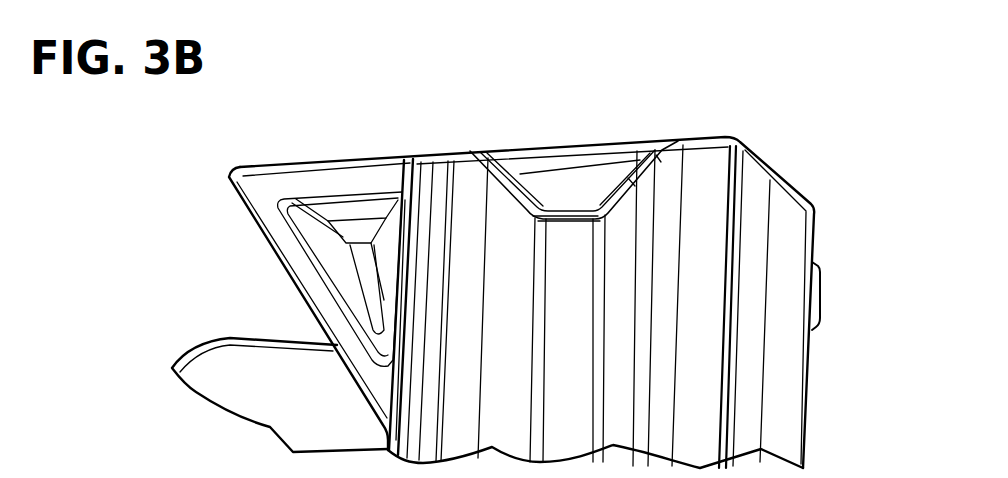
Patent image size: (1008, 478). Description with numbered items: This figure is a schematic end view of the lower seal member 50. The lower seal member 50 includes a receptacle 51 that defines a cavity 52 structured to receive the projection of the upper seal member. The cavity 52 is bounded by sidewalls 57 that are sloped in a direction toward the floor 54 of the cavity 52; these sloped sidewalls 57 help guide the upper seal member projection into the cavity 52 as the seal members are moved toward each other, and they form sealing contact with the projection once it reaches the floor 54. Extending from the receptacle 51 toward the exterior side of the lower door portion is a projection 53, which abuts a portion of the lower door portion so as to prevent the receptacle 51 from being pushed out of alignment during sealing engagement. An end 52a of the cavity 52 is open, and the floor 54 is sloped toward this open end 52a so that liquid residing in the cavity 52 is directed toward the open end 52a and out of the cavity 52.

The lower seal member 50 is at (777, 372).
The receptacle 51 is at (755, 214).
The cavity 52 is at (573, 187).
The open end of the receptacle cavity 52a is at (573, 217).
The projection 53 is at (248, 165).
The floor of the cavity 54 is at (625, 165).
The sidewalls 57 is at (522, 168).